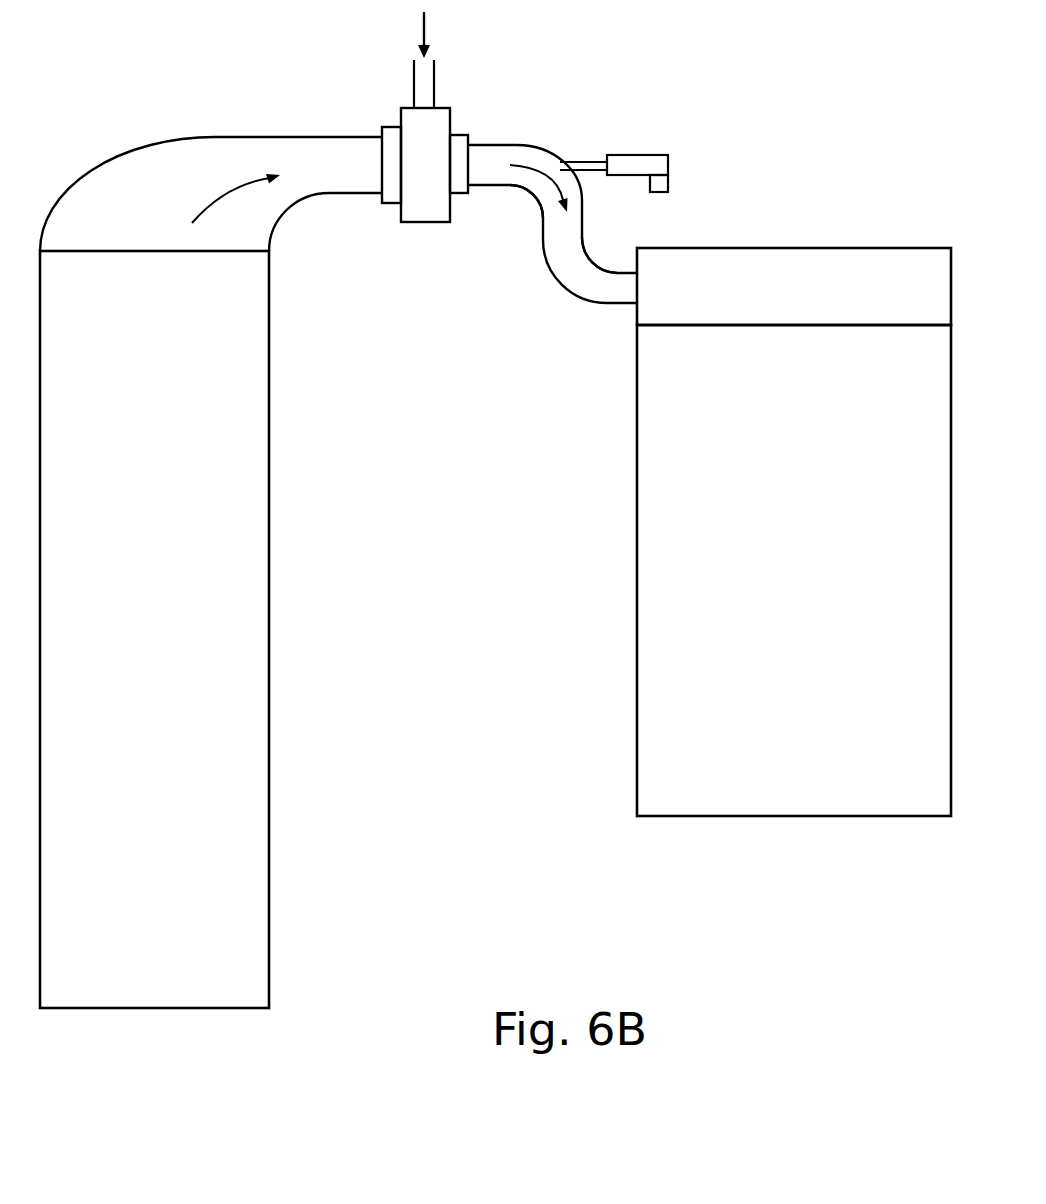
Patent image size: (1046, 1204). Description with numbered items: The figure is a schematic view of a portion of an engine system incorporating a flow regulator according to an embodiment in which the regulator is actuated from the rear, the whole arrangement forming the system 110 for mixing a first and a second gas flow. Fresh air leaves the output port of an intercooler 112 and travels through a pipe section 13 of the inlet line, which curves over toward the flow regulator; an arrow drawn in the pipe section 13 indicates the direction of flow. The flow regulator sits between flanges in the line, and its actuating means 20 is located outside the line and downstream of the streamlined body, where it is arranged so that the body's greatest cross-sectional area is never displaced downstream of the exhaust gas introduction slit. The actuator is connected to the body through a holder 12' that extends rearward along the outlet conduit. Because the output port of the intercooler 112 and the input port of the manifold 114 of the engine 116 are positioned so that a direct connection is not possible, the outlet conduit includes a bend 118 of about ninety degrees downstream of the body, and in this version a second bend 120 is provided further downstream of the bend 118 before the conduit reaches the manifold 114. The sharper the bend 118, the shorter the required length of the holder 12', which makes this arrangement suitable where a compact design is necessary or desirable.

The pipe section 13 is at (211, 159).
The holder 12' is at (608, 132).
The actuating means 20 is at (660, 160).
The system for mixing a first and a second gas flow 110 is at (383, 86).
The intercooler 112 is at (175, 522).
The manifold 114 is at (813, 296).
The engine 116 is at (815, 526).
The bend 118 is at (540, 186).
The second bend 120 is at (577, 273).